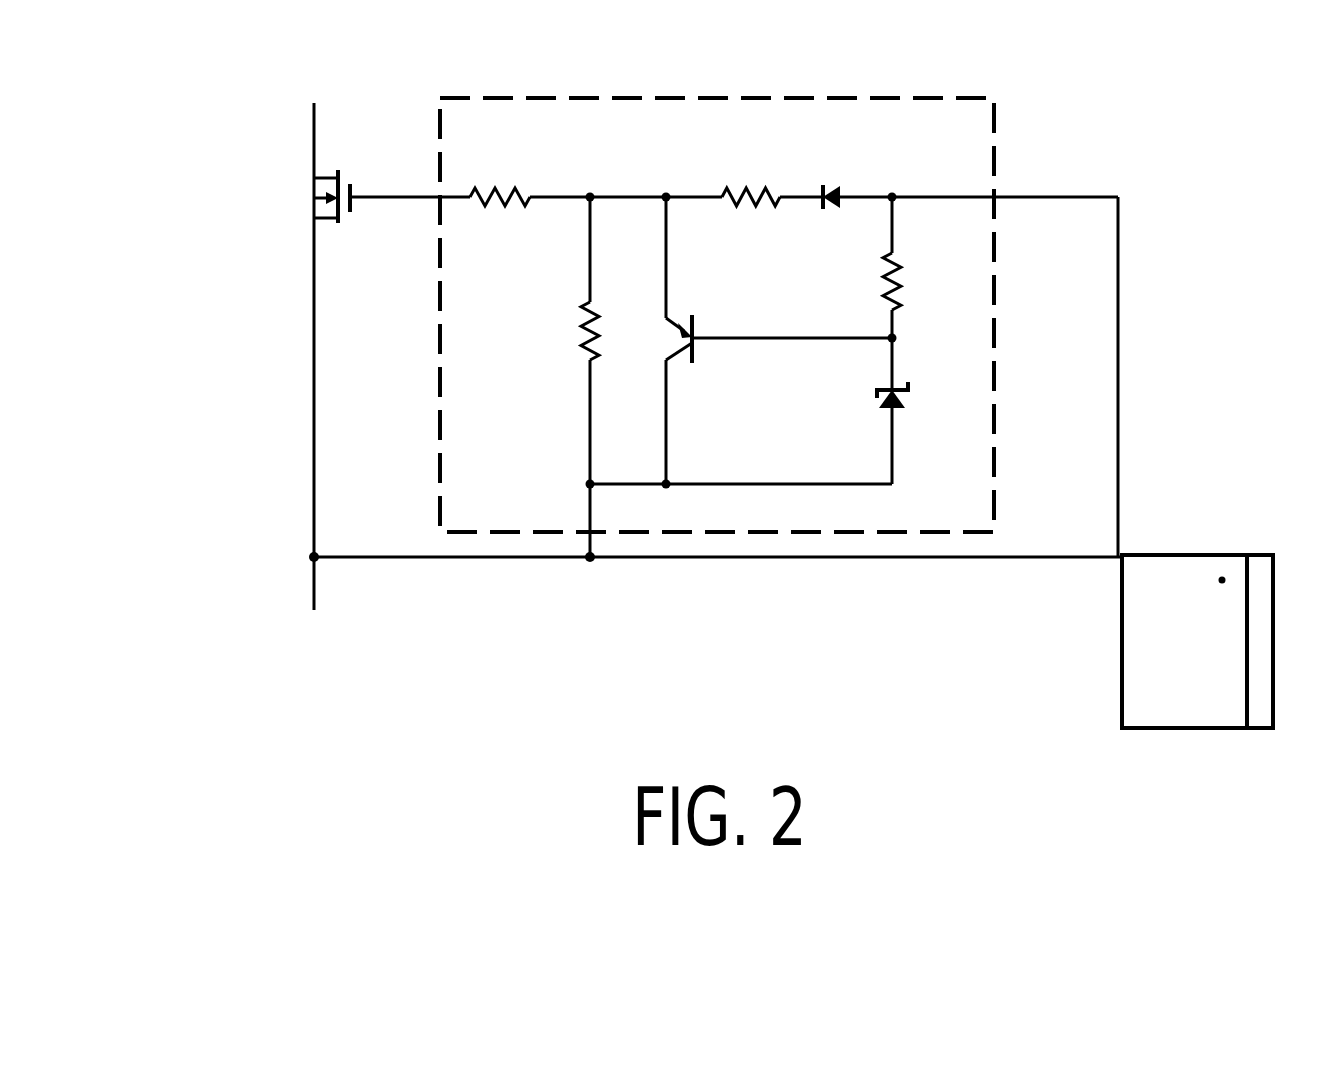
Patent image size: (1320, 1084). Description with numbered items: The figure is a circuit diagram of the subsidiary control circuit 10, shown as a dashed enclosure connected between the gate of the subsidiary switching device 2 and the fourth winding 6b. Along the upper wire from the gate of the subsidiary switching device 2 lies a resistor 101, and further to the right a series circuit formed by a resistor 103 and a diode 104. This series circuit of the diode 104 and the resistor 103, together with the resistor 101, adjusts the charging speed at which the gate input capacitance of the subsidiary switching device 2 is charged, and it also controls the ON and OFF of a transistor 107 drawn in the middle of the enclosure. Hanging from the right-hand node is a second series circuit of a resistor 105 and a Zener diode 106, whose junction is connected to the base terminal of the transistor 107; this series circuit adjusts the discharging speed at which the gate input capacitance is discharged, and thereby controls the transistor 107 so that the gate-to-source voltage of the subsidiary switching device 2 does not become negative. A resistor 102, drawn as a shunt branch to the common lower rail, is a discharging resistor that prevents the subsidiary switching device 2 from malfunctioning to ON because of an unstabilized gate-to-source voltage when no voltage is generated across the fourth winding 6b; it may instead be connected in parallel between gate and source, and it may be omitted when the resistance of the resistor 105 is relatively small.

The subsidiary switching device 2 is at (313, 206).
The subsidiary control circuit 10 is at (706, 98).
The resistor 101 is at (527, 190).
The resistor 102 is at (582, 330).
The resistor 103 is at (776, 188).
The diode 104 is at (838, 190).
The resistor 105 is at (900, 260).
The Zener diode 106 is at (893, 430).
The transistor 107 is at (697, 355).
The fourth winding 6b is at (1245, 660).